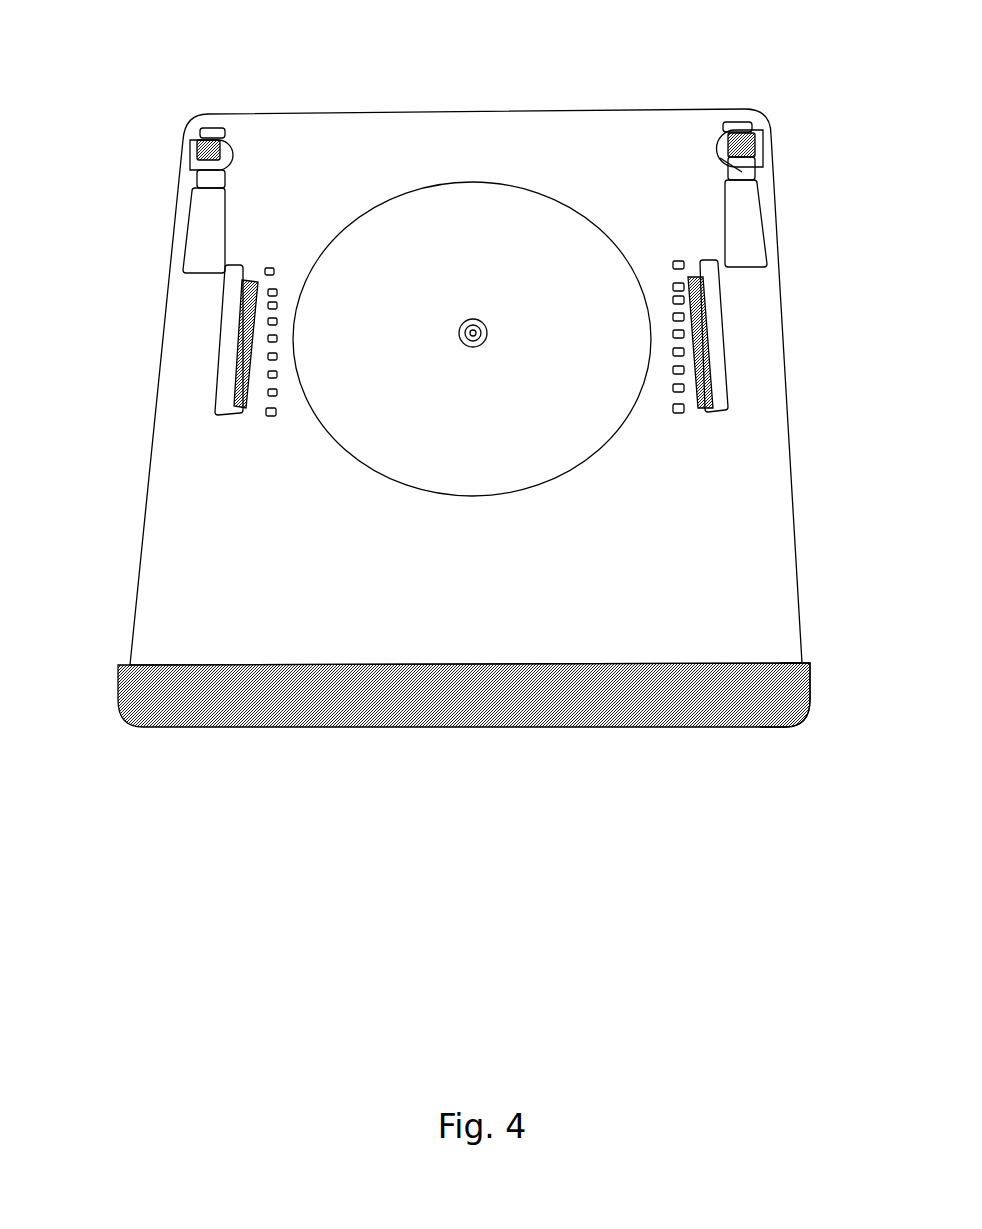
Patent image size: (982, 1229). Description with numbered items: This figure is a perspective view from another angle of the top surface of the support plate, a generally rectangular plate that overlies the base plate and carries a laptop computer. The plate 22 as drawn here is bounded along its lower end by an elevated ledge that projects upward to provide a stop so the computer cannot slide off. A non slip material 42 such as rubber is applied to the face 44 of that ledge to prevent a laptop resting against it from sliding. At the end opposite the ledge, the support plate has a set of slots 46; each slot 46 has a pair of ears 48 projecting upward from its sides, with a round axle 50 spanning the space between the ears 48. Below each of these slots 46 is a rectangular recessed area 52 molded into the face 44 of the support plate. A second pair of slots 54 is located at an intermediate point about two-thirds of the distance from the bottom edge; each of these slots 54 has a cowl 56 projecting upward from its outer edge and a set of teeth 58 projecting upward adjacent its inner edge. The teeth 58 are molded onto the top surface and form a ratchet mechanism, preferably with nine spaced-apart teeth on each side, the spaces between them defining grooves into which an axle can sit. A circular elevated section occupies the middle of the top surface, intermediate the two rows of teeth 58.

The base plate 22 is at (302, 555).
The non slip material 42 is at (745, 665).
The face 44 is at (713, 150).
The slot 46 is at (197, 190).
The ears 48 is at (205, 150).
The round axle 50 is at (137, 670).
The rectangular recessed area 52 is at (407, 133).
The second pair of slots 54 is at (555, 144).
The cowl 56 is at (300, 358).
The teeth 58 is at (268, 268).